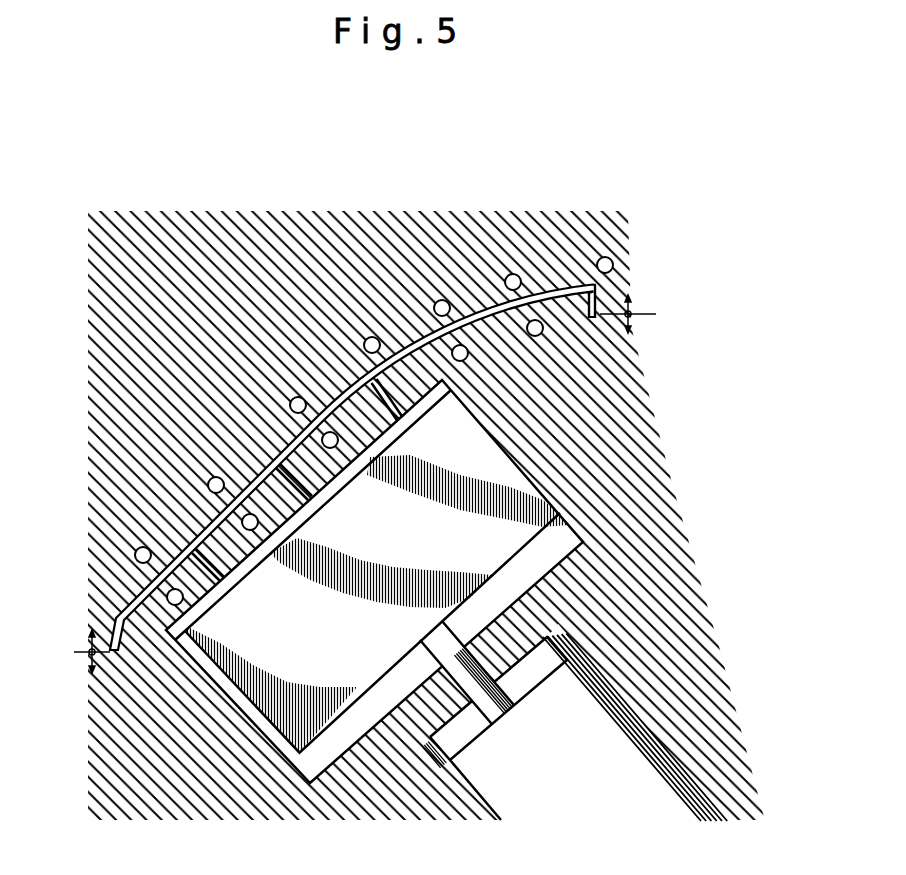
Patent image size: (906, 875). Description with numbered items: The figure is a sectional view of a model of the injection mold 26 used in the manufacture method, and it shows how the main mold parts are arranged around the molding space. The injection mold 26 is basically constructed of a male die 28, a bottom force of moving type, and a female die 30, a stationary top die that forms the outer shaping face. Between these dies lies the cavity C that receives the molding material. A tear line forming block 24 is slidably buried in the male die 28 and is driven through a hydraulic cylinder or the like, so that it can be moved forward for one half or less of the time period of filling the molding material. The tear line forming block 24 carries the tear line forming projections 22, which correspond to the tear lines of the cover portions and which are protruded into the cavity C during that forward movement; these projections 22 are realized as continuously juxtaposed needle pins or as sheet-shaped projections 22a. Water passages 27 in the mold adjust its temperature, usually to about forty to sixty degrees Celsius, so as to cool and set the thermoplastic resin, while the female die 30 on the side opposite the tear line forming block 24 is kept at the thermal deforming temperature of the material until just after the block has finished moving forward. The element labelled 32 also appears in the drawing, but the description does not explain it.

The tear line forming projections 22 is at (290, 480).
The sheet-shaped projections 22a is at (386, 398).
The water passages 27 is at (512, 274).
The cavity C is at (549, 296).
The injection mold 26 is at (444, 515).
The female die 30 is at (613, 264).
The male die 28 is at (426, 555).
The tear line forming block 24 is at (508, 540).
The guide rail 32 is at (620, 724).